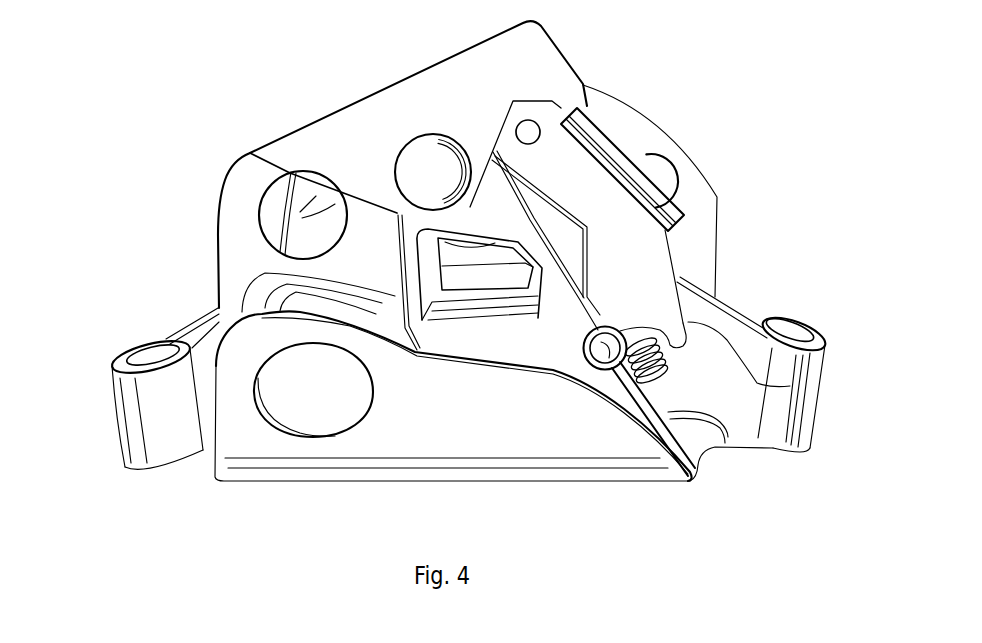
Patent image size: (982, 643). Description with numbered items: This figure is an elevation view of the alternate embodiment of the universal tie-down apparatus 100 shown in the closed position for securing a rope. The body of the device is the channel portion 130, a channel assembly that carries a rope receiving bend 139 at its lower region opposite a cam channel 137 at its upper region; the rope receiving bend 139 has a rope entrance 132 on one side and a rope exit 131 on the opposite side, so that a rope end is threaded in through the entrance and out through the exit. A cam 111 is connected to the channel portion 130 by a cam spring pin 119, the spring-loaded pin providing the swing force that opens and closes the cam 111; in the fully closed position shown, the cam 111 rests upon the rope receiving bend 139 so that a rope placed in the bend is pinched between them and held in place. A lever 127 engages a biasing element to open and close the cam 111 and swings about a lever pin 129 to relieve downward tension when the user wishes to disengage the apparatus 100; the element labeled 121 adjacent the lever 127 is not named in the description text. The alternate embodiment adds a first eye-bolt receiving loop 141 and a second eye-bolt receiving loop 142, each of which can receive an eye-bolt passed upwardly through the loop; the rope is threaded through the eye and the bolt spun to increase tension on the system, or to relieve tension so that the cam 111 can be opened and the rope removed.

The universal tie-down apparatus 100 is at (190, 176).
The cam channel 137 is at (331, 167).
The cam spring pin 119 is at (411, 192).
The channel portion 130 is at (348, 270).
The housing 121 is at (657, 259).
The lever 127 is at (633, 153).
The cam 111 is at (544, 326).
The rope receiving bend 139 is at (388, 426).
The second eye-bolt receiving loop 142 is at (133, 407).
The rope entrance 132 is at (99, 462).
The lever pin 129 is at (790, 386).
The first eye-bolt receiving loop 141 is at (780, 418).
The rope exit 131 is at (745, 472).